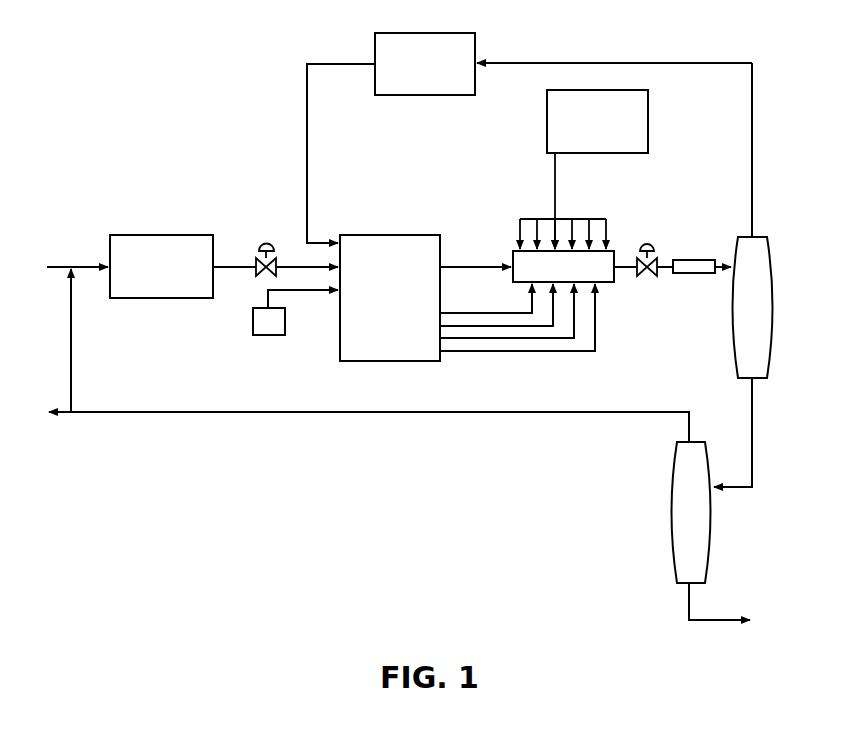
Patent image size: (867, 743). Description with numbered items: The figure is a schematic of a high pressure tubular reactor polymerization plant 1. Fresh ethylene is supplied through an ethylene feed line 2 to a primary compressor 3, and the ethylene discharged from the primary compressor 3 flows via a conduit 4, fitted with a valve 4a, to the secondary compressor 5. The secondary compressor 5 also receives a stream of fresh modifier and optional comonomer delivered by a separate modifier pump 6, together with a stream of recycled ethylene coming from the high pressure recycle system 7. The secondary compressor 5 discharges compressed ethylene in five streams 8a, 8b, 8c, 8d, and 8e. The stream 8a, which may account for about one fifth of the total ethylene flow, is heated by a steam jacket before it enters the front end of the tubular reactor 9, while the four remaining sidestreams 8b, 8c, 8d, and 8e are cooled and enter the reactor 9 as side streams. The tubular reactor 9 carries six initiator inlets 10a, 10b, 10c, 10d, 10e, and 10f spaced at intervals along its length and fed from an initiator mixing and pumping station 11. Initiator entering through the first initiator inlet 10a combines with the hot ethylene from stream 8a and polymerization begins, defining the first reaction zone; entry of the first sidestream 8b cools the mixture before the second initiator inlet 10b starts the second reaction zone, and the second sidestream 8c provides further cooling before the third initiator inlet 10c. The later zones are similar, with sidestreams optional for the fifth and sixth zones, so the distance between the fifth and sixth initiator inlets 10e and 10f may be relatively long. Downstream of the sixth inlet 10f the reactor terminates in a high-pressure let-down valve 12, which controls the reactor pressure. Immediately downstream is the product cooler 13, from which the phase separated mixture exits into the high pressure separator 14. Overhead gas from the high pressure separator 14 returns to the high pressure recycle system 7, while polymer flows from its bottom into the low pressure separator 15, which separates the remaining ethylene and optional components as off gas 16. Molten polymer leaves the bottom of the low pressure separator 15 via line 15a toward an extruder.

The polymerization plant 1 is at (113, 48).
The ethylene feed line 2 is at (60, 265).
The primary compressor 3 is at (161, 283).
The conduit 4 is at (240, 262).
The valve 4a is at (263, 242).
The secondary compressor 5 is at (338, 340).
The modifier pump 6 is at (252, 326).
The high pressure recycle system 7 is at (410, 48).
The stream 8a is at (468, 262).
The sidestream 8b is at (455, 316).
The sidestream 8c is at (490, 328).
The sidestream 8d is at (537, 340).
The sidestream 8e is at (578, 353).
The tubular reactor 9 is at (605, 284).
The first initiator inlet 10a is at (520, 233).
The second initiator inlet 10b is at (530, 237).
The third initiator inlet 10c is at (545, 238).
The fourth initiator inlet 10d is at (580, 238).
The fifth initiator inlet 10e is at (595, 238).
The sixth initiator inlet 10f is at (607, 233).
The initiator mixing and pumping station 11 is at (648, 122).
The high-pressure let-down valve 12 is at (644, 272).
The product cooler 13 is at (688, 259).
The high pressure separator 14 is at (745, 344).
The low pressure separator 15 is at (680, 527).
The line 15a is at (712, 623).
The off gas 16 is at (618, 414).